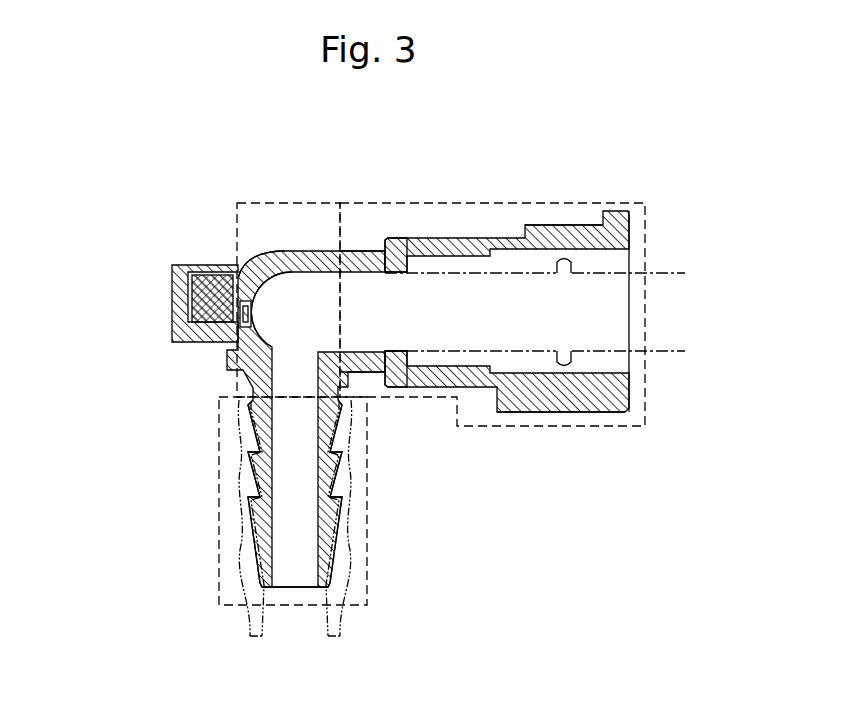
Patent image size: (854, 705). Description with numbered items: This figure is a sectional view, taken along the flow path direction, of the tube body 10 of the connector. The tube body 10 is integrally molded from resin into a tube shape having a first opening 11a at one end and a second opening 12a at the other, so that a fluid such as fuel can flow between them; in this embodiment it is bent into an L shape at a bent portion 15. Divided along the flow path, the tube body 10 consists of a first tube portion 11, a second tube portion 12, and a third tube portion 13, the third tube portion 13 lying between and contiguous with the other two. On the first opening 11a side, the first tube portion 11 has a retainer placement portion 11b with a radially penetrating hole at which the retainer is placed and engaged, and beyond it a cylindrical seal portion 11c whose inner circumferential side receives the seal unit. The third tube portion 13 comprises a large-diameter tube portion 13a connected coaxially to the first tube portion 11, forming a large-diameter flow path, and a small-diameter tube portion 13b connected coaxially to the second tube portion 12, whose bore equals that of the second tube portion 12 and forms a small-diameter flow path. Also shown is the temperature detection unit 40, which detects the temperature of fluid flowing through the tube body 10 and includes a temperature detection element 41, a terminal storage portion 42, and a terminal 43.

The tube body 10 is at (630, 210).
The first tube portion 11 is at (462, 202).
The first opening 11a is at (632, 245).
The retainer placement portion 11b is at (586, 230).
The seal portion 11c is at (422, 237).
The second tube portion 12 is at (218, 478).
The second opening 12a is at (297, 588).
The third tube portion 13 is at (234, 245).
The large-diameter tube portion 13a is at (321, 255).
The small-diameter tube portion 13b is at (265, 372).
The bent portion 15 is at (261, 252).
The temperature detection unit 40 is at (155, 314).
The temperature detection element 41 is at (248, 318).
The terminal storage portion 42 is at (182, 330).
The terminal 43 is at (210, 298).